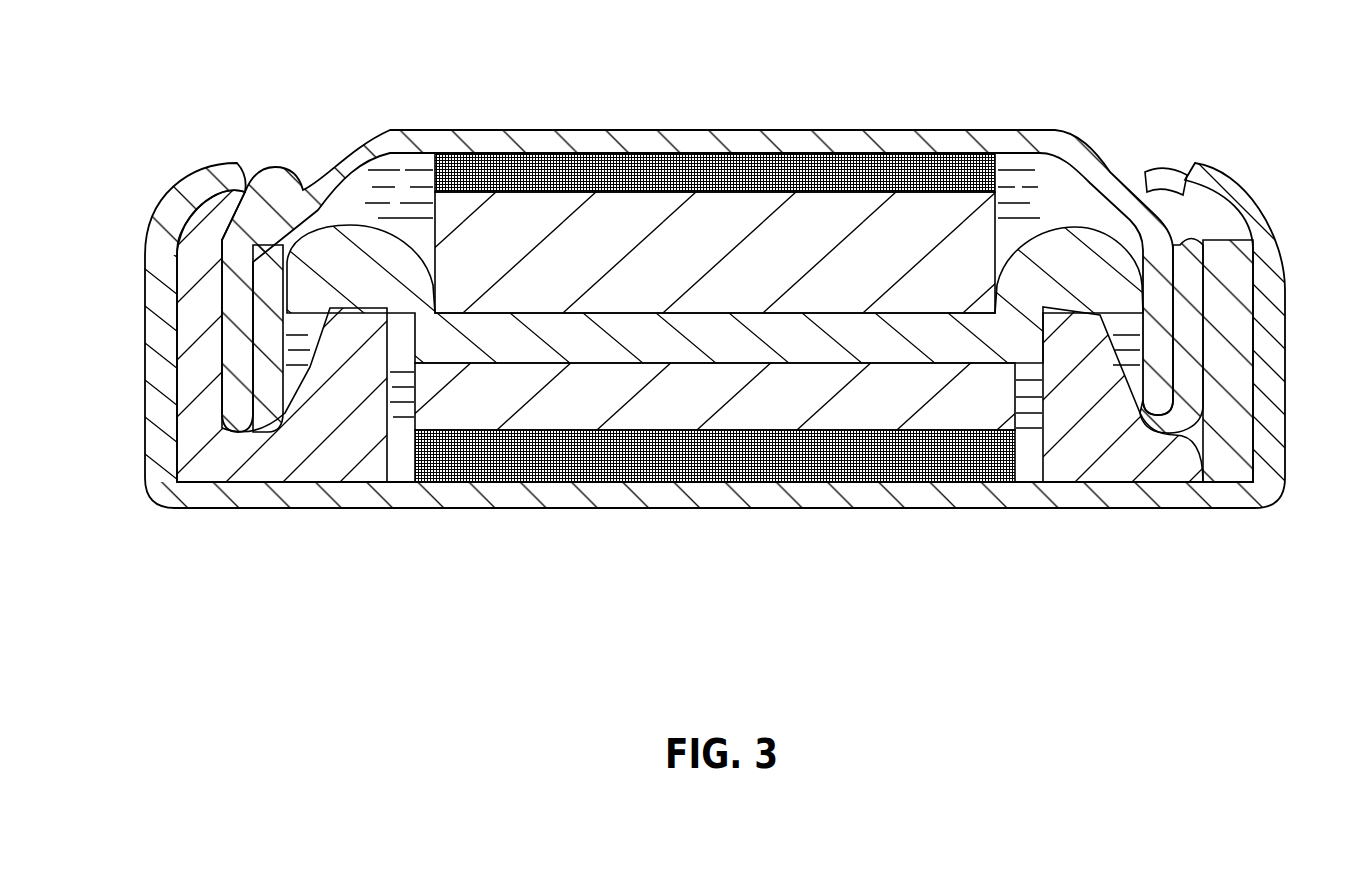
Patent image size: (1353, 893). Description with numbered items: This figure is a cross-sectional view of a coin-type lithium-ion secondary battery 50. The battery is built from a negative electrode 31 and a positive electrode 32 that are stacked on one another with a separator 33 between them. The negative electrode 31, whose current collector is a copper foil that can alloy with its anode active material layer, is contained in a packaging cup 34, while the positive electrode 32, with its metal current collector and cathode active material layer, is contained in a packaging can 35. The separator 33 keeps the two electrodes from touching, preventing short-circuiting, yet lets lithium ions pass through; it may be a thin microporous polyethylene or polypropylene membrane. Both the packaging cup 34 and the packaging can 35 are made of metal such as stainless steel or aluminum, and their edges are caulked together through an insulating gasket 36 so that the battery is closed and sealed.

The secondary battery 50 is at (725, 329).
The negative electrode 31 is at (815, 232).
The positive electrode 32 is at (752, 462).
The separator 33 is at (1080, 258).
The packaging cup 34 is at (481, 135).
The packaging can 35 is at (510, 485).
The insulating gasket 36 is at (300, 465).